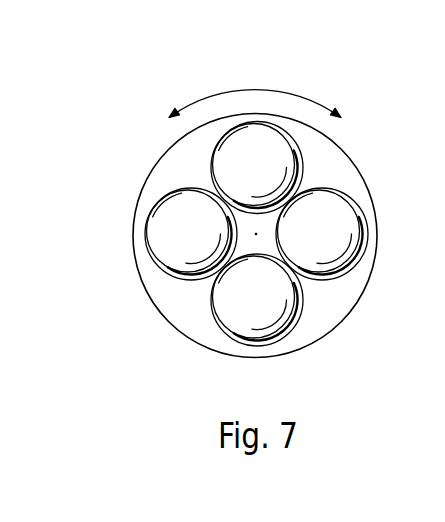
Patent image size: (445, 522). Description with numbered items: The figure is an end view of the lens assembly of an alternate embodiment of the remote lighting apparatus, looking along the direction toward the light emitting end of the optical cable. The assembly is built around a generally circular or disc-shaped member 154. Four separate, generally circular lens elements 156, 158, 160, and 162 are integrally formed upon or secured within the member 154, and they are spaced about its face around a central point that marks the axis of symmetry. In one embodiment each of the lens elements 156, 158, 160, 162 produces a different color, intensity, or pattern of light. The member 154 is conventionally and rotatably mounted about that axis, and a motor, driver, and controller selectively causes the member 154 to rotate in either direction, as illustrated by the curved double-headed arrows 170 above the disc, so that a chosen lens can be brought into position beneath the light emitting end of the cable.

The disc-shaped member 154 is at (348, 303).
The lens element 156 is at (350, 210).
The lens element 158 is at (216, 320).
The lens element 160 is at (147, 247).
The lens element 162 is at (220, 167).
The arrows 170 is at (288, 92).